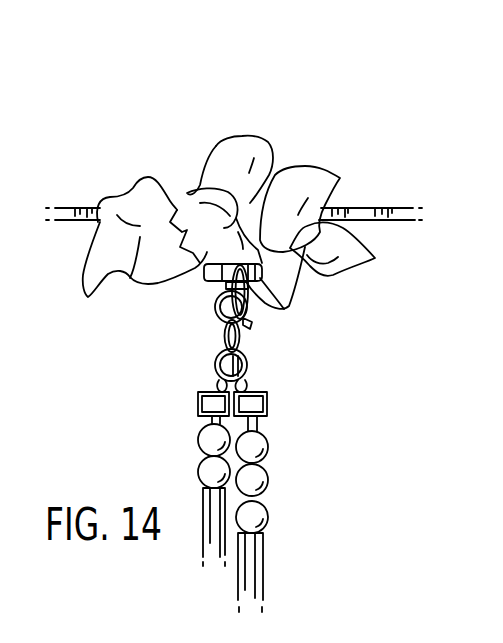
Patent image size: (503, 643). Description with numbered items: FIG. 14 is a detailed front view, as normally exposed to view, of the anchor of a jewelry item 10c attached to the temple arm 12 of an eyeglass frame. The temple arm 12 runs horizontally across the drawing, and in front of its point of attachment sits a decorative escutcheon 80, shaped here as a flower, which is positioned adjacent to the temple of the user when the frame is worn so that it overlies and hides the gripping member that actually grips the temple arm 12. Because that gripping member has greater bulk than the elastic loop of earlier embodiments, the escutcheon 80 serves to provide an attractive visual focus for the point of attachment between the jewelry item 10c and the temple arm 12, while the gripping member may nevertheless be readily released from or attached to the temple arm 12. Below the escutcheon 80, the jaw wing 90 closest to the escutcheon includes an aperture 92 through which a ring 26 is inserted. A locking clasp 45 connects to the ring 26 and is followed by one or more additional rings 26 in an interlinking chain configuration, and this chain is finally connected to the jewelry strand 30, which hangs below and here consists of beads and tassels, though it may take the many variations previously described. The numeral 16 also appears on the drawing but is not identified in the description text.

The jewelry item 10c is at (324, 93).
The temple arm 12 is at (407, 205).
The connector ring 16 is at (237, 128).
The ring 26 is at (243, 290).
The jewelry strand 30 is at (268, 482).
The locking clasp 45 is at (253, 313).
The decorative escutcheon 80 is at (338, 178).
The jaw wing 90 is at (207, 278).
The aperture 92 is at (224, 284).